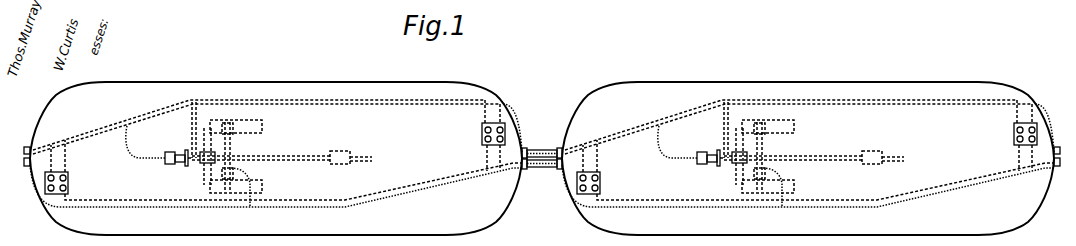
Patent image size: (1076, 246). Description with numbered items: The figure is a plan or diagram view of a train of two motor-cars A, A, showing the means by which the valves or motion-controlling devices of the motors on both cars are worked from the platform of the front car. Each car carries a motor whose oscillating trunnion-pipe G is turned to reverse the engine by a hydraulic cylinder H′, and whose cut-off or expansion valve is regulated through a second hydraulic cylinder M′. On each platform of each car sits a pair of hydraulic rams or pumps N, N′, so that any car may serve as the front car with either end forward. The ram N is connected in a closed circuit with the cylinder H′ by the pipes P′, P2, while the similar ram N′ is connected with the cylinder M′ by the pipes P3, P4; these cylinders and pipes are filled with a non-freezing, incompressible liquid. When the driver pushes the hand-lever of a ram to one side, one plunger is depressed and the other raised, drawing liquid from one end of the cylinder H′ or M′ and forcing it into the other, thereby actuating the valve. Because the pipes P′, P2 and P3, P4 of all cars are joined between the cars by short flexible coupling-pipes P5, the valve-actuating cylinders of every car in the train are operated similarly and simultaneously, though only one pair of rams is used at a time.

The motor-car A is at (542, 158).
The flexible coupling-pipe P5 is at (540, 149).
The pipe P4 is at (107, 128).
The pipe P3 is at (113, 134).
The hydraulic ram or pump N is at (88, 187).
The hydraulic ram or pump N′ is at (96, 168).
The cylinder M′ is at (175, 165).
The hydraulic cylinder H′ is at (242, 175).
The trunnion-pipe G is at (257, 130).
The pipe P′ is at (131, 203).
The pipe P2 is at (135, 210).